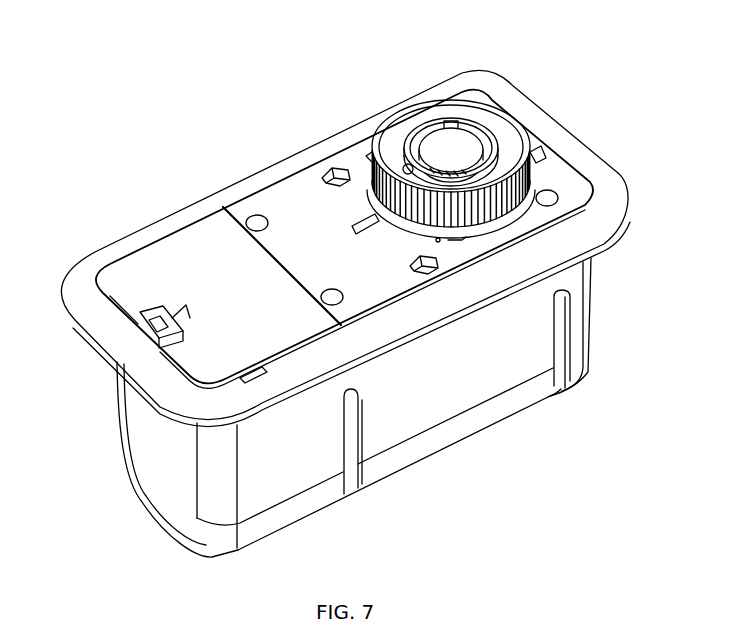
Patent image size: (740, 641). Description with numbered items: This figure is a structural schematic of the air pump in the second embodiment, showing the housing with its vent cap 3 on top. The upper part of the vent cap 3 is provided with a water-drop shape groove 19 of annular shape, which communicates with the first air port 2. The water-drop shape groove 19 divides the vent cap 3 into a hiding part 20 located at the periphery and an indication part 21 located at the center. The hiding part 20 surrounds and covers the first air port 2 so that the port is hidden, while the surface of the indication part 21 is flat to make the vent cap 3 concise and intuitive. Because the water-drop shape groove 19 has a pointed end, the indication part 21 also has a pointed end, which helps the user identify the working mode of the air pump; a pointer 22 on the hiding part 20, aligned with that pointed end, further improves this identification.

The first air port 2 is at (405, 152).
The vent cap 3 is at (540, 150).
The water-drop shape groove 19 is at (487, 143).
The hiding part 20 is at (417, 122).
The indication part 21 is at (447, 137).
The pointer 22 is at (380, 152).